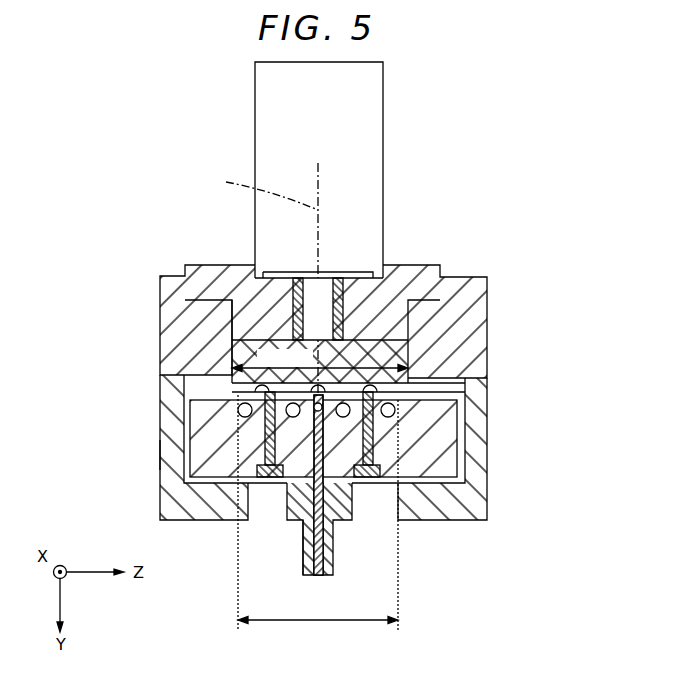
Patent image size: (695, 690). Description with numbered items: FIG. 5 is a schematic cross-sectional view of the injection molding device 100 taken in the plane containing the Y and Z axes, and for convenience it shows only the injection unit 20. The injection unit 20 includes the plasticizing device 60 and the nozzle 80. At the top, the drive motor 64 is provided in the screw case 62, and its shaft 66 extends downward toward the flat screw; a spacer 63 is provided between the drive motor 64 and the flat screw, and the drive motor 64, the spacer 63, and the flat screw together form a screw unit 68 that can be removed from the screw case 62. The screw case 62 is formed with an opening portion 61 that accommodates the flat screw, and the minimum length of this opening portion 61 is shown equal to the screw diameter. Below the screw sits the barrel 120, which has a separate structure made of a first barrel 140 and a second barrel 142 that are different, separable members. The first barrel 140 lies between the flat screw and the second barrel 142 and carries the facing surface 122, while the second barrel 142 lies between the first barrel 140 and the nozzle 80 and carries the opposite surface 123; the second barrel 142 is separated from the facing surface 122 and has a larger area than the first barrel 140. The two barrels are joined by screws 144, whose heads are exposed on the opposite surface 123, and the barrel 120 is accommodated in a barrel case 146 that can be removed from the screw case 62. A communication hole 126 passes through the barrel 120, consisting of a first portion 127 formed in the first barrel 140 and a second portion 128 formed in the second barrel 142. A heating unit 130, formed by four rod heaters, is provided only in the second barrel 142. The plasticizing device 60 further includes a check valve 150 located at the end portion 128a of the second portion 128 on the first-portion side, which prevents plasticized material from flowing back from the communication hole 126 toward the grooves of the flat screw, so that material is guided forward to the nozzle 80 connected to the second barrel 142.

The injection molding device 100 is at (485, 120).
The injection unit 20 is at (495, 220).
The screw unit 68 is at (398, 165).
The drive motor 64 is at (280, 133).
The plasticizing device 60 is at (488, 256).
The screw case 62 is at (192, 333).
The opening portion 61 is at (418, 352).
The spacer 63 is at (285, 310).
The shaft 66 is at (296, 286).
The end portion 128a is at (320, 396).
The barrel 120 is at (550, 392).
The facing surface 122 is at (440, 386).
The first barrel 140 is at (440, 404).
The second barrel 142 is at (415, 438).
The communication hole 126 is at (92, 380).
The first portion 127 is at (262, 389).
The second portion 128 is at (265, 445).
The screws 144 is at (264, 487).
The heating unit 130 is at (325, 488).
The opposite surface 123 is at (415, 490).
The barrel case 146 is at (180, 456).
The nozzle 80 is at (304, 563).
The check valve 150 is at (333, 506).